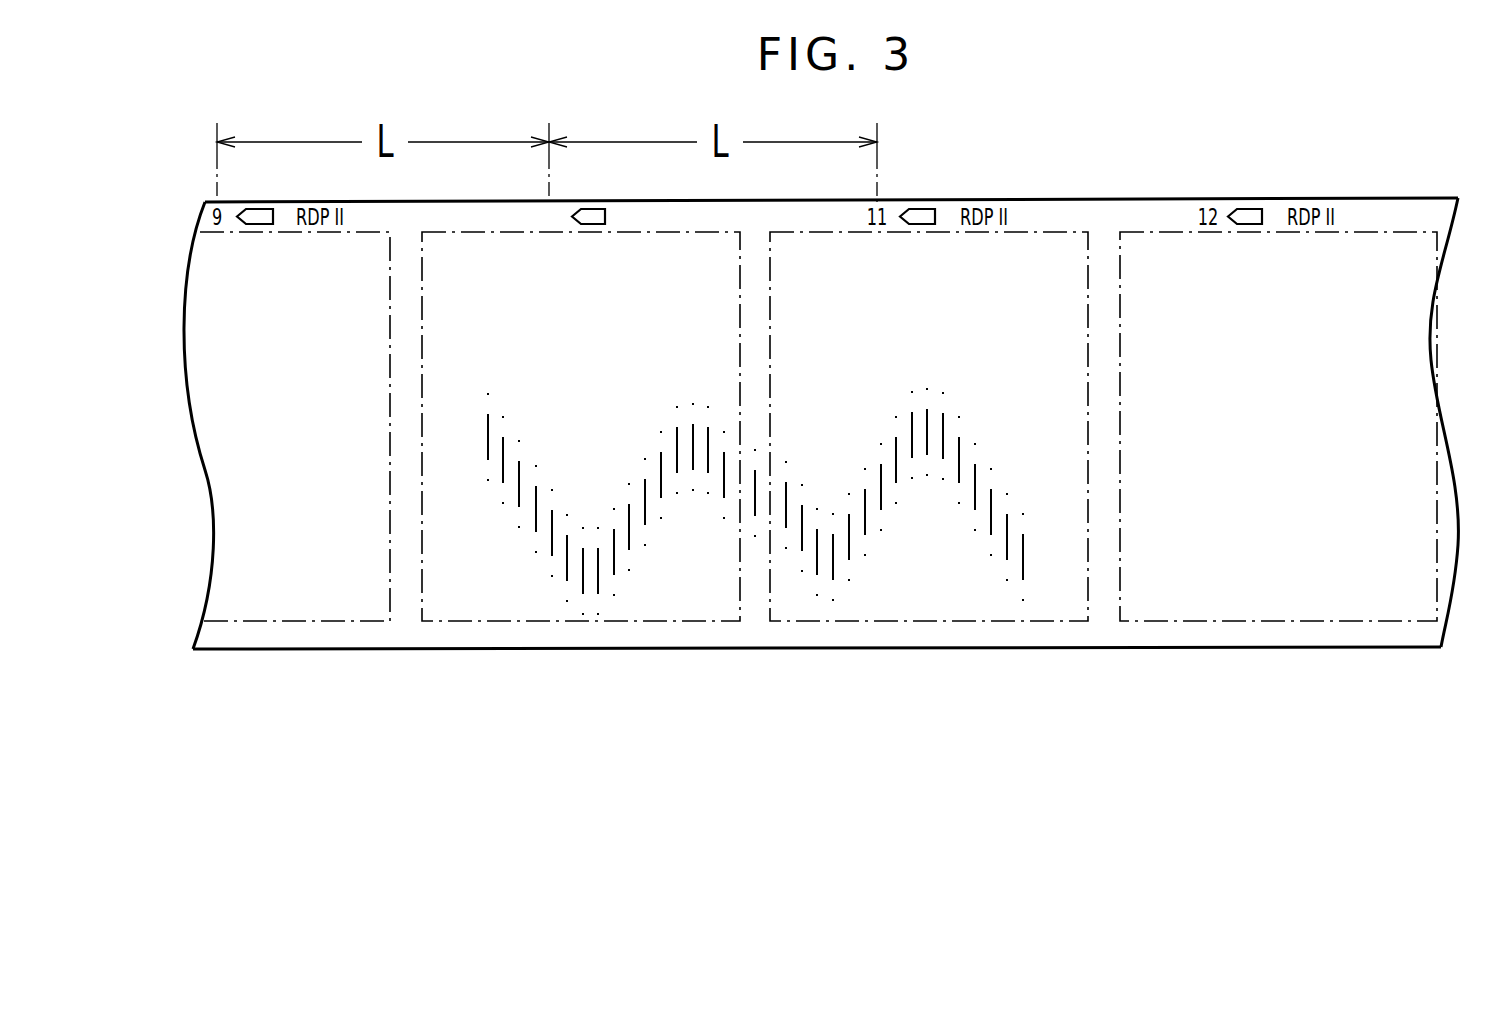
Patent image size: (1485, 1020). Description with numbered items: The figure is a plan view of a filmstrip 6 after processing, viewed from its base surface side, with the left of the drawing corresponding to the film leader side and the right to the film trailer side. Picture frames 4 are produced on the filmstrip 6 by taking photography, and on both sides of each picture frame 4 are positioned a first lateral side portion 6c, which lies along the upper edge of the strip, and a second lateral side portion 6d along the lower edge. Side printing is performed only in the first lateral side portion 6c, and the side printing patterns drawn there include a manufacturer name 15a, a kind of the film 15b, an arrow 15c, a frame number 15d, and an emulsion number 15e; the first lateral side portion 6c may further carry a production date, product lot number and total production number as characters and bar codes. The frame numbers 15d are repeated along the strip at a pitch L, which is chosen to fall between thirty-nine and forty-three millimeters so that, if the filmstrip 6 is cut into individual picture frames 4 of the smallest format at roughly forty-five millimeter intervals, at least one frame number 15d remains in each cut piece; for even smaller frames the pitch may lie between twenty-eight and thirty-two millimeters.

The picture frame 4 is at (422, 572).
The filmstrip 6 is at (821, 438).
The first lateral side portion 6c is at (1047, 213).
The second lateral side portion 6d is at (1212, 632).
The manufacturer name 15a is at (468, 229).
The kind of the film 15b is at (684, 235).
The arrow 15c is at (597, 226).
The frame number 15d is at (548, 229).
The emulsion number 15e is at (830, 222).